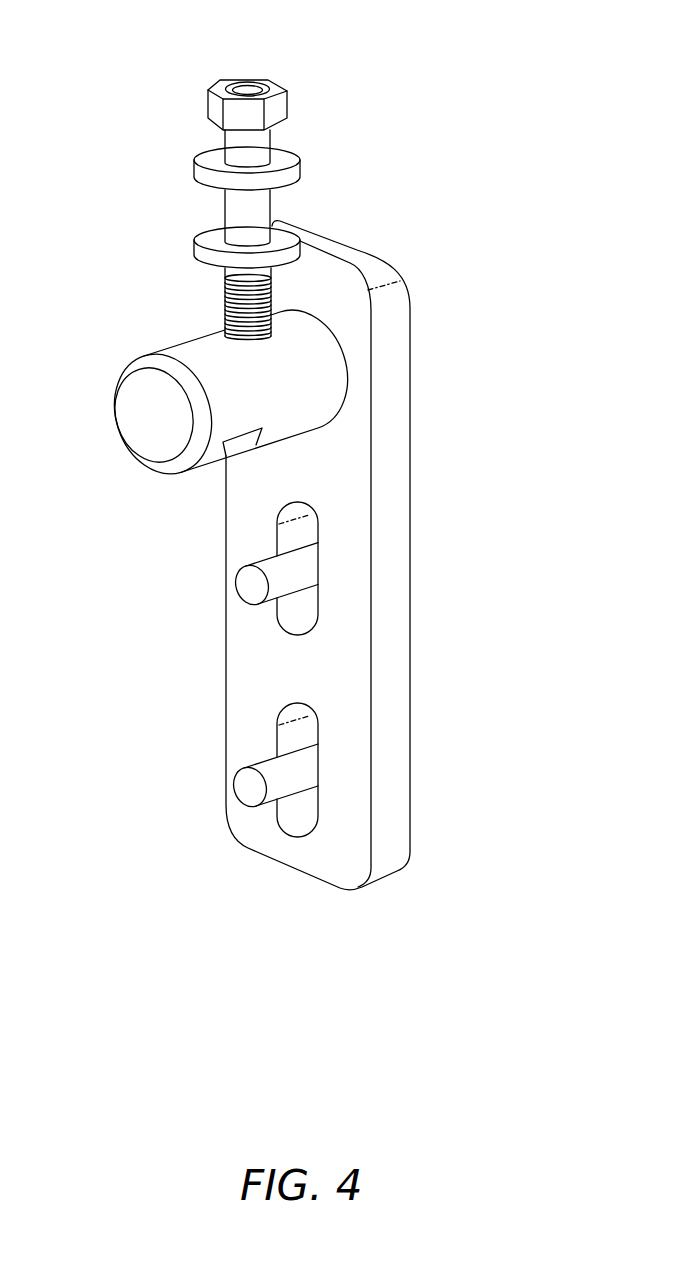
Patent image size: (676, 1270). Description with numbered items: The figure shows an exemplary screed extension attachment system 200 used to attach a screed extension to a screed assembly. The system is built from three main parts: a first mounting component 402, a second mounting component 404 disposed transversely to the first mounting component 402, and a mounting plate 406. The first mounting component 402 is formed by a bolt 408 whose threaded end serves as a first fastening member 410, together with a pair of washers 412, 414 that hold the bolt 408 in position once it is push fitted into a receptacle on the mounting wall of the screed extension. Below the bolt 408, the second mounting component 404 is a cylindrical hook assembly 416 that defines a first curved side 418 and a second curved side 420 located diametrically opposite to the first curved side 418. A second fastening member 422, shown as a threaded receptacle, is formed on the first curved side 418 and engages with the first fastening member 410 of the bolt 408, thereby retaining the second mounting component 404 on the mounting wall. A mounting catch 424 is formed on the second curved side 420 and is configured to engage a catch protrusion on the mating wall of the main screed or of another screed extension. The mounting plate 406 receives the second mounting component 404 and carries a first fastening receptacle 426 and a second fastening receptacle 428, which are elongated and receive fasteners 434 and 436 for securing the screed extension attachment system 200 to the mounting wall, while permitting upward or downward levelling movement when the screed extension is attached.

The screed extension attachment system 200 is at (331, 62).
The first mounting component 402 is at (249, 70).
The second mounting component 404 is at (172, 345).
The mounting plate 406 is at (404, 457).
The bolt 408 is at (290, 105).
The first fastening member 410 is at (263, 307).
The washer 412 is at (287, 164).
The washer 414 is at (287, 239).
The cylindrical hook assembly 416 is at (140, 433).
The first curved side 418 is at (217, 343).
The second curved side 420 is at (290, 432).
The second fastening member 422 is at (262, 338).
The mounting catch 424 is at (232, 456).
The first fastening receptacle 426 is at (288, 612).
The second fastening receptacle 428 is at (288, 813).
The fastener 434 is at (295, 567).
The fastener 436 is at (295, 768).